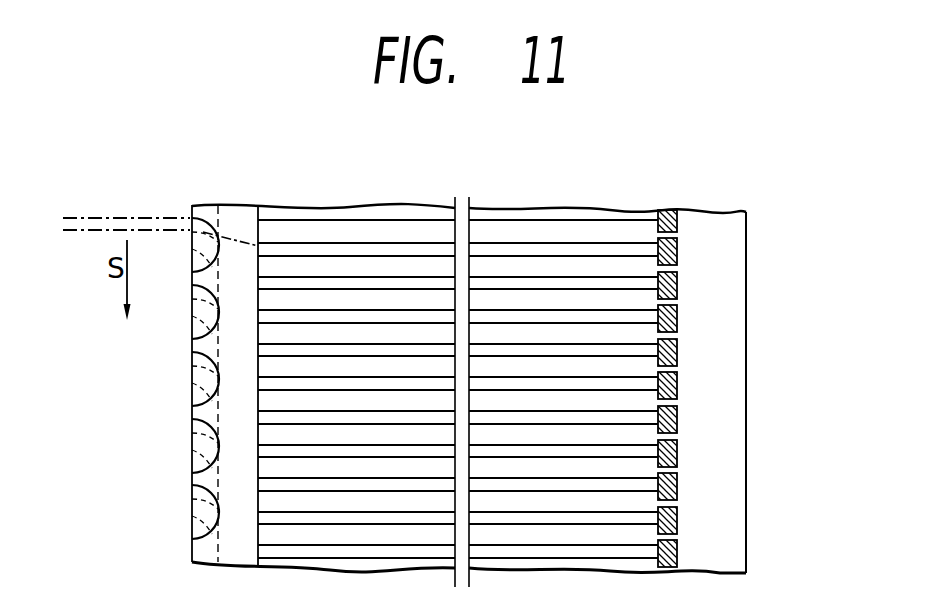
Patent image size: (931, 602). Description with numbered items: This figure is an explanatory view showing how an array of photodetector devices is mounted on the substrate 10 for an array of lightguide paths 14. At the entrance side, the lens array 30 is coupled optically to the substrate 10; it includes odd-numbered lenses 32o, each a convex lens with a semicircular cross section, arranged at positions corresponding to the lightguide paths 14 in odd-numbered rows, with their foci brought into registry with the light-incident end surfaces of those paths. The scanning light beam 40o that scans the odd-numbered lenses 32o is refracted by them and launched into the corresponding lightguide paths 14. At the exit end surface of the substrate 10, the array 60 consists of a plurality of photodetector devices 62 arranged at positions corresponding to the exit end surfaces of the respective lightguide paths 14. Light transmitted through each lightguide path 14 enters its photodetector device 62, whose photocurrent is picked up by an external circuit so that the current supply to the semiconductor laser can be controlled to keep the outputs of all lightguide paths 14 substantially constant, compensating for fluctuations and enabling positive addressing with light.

The substrate for the array of lightguide paths 10 is at (376, 198).
The lightguide paths 14 is at (571, 249).
The lens array 30 is at (180, 340).
The odd-numbered lenses 32o is at (200, 248).
The light beam 40o is at (116, 219).
The array of photodetector devices 60 is at (731, 347).
The photodetector devices 62 is at (678, 246).